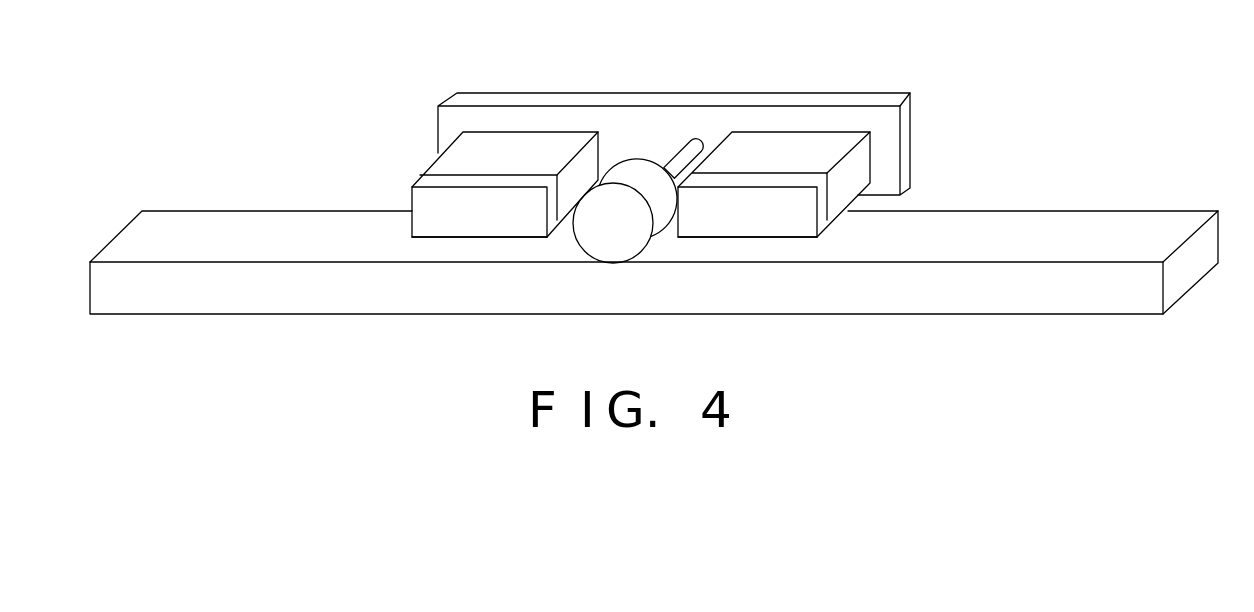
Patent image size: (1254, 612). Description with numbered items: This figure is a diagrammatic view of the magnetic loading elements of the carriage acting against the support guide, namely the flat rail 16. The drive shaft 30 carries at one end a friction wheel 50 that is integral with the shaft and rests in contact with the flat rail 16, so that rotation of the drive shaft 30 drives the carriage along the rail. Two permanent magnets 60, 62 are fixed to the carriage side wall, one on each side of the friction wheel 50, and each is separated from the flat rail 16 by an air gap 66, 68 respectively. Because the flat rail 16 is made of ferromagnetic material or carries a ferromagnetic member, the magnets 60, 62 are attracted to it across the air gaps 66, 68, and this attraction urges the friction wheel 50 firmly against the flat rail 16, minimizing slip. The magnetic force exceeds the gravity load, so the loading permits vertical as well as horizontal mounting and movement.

The flat rail 16 is at (1055, 227).
The drive shaft 30 is at (668, 148).
The friction wheel 50 is at (658, 233).
The permanent magnet 60 is at (483, 153).
The permanent magnet 62 is at (773, 153).
The air gap 66 is at (475, 245).
The air gap 68 is at (778, 245).